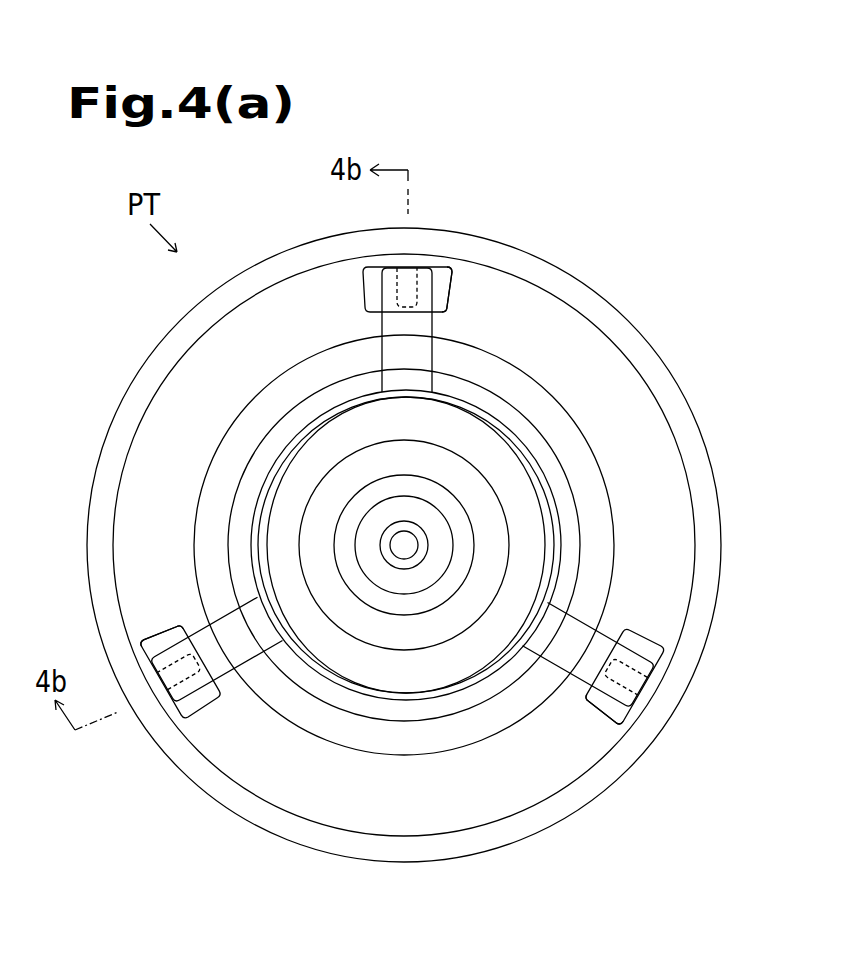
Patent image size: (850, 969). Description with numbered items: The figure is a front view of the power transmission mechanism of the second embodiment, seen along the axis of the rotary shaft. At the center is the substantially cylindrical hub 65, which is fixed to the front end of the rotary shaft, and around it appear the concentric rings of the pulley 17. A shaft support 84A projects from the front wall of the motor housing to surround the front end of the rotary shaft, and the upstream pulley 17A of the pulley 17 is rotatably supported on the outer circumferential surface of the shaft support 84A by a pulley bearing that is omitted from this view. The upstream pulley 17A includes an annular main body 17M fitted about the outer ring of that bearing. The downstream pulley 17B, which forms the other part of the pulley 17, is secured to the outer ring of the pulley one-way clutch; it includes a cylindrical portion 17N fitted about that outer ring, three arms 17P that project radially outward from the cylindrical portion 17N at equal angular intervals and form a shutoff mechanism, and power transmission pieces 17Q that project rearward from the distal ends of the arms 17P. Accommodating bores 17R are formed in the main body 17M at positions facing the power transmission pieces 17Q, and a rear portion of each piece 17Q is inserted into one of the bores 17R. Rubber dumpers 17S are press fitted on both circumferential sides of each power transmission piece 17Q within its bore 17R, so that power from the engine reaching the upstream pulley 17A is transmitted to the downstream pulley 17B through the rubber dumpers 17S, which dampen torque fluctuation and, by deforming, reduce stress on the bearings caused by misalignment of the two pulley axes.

The pulley 17 is at (497, 242).
The upstream pulley 17A is at (555, 268).
The annular main body 17M is at (588, 323).
The shaft support 84A is at (527, 427).
The downstream pulley 17B is at (545, 497).
The cylindrical portion 17N is at (538, 532).
The hub 65 is at (467, 512).
The arms 17P is at (430, 358).
The power transmission pieces 17Q is at (393, 283).
The accommodating bores 17R is at (444, 284).
The rubber dumpers 17S is at (373, 271).